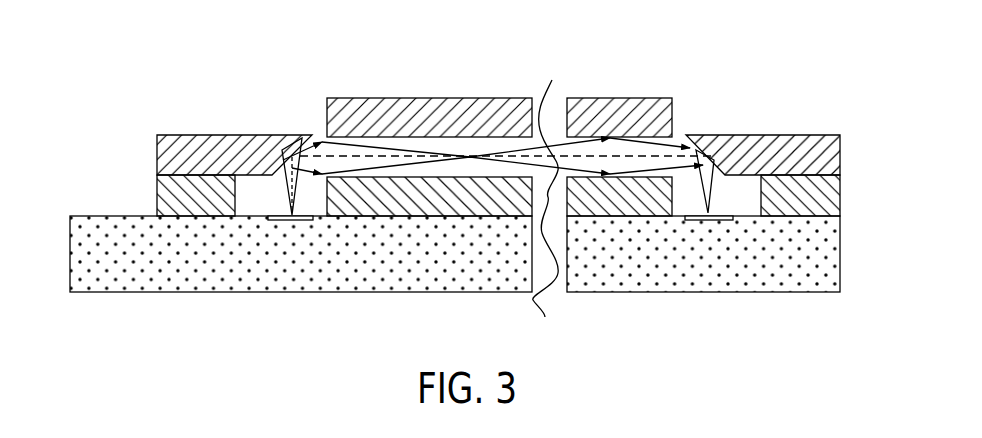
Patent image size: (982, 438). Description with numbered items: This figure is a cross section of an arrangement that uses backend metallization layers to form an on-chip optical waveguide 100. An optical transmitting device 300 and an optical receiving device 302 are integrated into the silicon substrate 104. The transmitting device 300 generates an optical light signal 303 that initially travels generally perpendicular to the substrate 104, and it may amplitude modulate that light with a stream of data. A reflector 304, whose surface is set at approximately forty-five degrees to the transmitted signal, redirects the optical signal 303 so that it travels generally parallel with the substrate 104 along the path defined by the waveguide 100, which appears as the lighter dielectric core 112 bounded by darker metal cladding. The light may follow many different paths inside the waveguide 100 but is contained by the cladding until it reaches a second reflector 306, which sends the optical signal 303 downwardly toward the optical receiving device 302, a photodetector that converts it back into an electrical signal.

The optical waveguide 100 is at (492, 82).
The substrate 104 is at (132, 279).
The dielectric core 112 is at (470, 140).
The optical transmitting device 300 is at (289, 223).
The optical receiving device 302 is at (692, 223).
The optical light signal 303 is at (283, 196).
The reflector 304 is at (281, 152).
The second reflector 306 is at (714, 158).